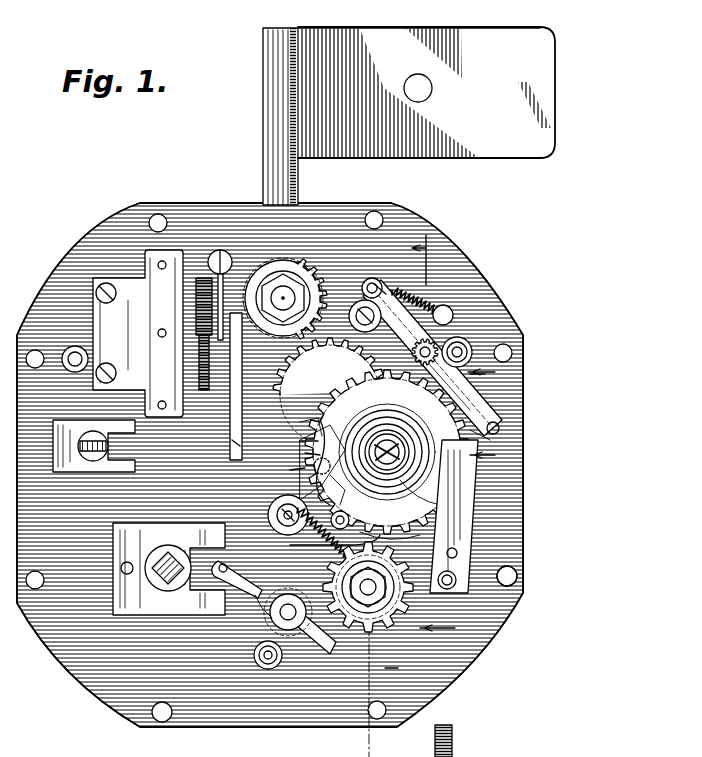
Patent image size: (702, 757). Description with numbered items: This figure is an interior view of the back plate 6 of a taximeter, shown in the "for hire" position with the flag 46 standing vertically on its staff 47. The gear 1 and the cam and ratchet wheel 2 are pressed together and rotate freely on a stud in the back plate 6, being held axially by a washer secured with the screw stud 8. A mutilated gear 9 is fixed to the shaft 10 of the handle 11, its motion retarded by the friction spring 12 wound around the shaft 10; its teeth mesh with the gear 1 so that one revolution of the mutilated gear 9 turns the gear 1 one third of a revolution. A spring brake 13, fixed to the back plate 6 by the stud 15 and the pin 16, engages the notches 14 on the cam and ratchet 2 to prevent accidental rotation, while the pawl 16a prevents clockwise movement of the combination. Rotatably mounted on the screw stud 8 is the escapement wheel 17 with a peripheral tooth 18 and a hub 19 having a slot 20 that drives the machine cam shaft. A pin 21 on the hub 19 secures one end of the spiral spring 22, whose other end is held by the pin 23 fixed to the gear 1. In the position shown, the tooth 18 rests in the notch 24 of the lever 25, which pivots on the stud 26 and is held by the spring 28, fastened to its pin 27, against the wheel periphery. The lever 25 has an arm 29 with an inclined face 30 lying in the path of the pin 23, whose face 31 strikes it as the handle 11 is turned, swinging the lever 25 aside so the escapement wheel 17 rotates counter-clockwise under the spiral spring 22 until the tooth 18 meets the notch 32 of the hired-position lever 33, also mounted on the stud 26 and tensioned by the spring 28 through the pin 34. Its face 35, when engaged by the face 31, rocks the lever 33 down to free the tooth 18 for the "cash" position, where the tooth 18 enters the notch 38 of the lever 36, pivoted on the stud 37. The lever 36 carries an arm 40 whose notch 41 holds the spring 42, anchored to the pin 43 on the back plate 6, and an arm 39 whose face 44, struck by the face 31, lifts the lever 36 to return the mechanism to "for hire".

The gear 1 is at (472, 482).
The cam and ratchet wheel 2 is at (248, 538).
The back plate 6 is at (500, 627).
The screw stud 8 is at (387, 452).
The mutilated gear 9 is at (410, 600).
The shaft 10 is at (378, 588).
The handle 11 is at (411, 496).
The friction spring 12 is at (469, 504).
The spring brake 13 is at (470, 522).
The notches 14 is at (350, 365).
The stud 15 is at (458, 578).
The pin 16 is at (468, 548).
The pawl 16a is at (457, 343).
The escapement wheel 17 is at (392, 420).
The tooth 18 is at (305, 425).
The hub 19 is at (418, 450).
The slot 20 is at (335, 490).
The pin 21 is at (305, 453).
The spiral spring 22 is at (316, 466).
The pin 23 is at (466, 375).
The notch 24 is at (300, 441).
The lever 25 is at (290, 470).
The stud 26 is at (280, 514).
The pin 27 is at (280, 500).
The spring 28 is at (322, 536).
The arm 29 is at (212, 355).
The inclined face 30 is at (315, 326).
The face 31 is at (432, 357).
The notch 32 is at (420, 494).
The lever 33 is at (393, 540).
The pin 34 is at (335, 554).
The face 35 is at (352, 520).
The lever 36 is at (422, 340).
The stud 37 is at (357, 302).
The notch 38 is at (468, 385).
The arm 39 is at (502, 423).
The arm 40 is at (371, 283).
The notch 41 is at (380, 282).
The spring 42 is at (425, 305).
The pin 43 is at (450, 313).
The face 44 is at (488, 425).
The flag 46 is at (543, 88).
The staff 47 is at (298, 193).